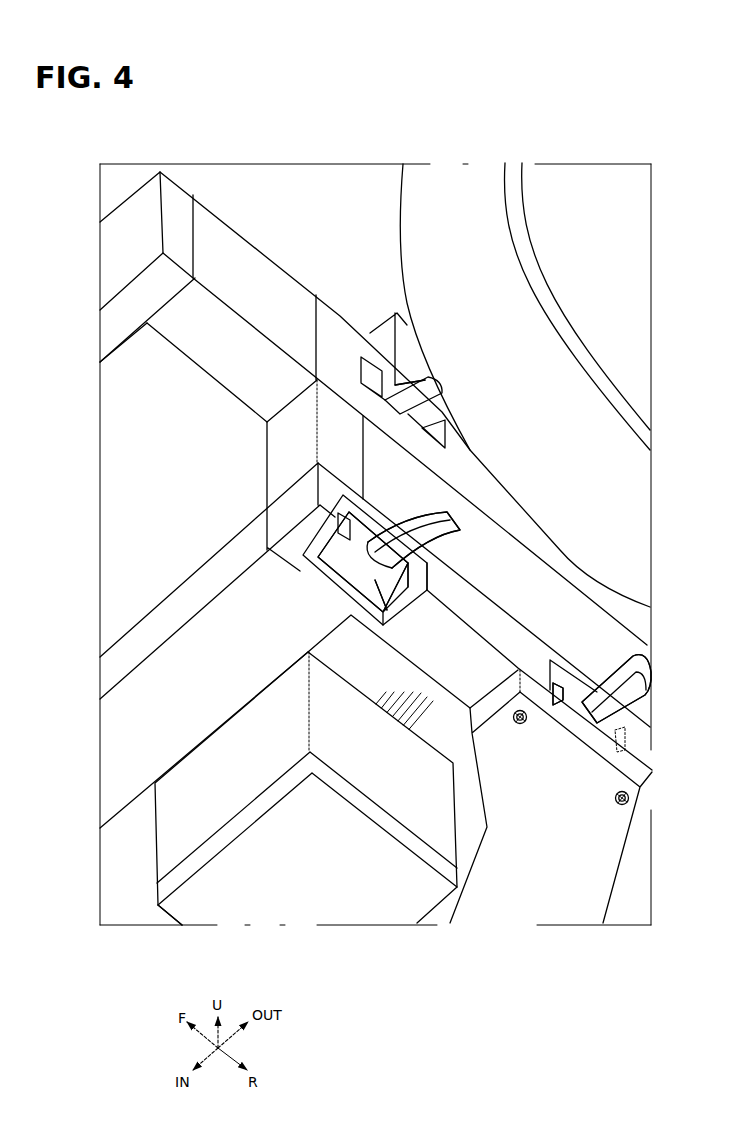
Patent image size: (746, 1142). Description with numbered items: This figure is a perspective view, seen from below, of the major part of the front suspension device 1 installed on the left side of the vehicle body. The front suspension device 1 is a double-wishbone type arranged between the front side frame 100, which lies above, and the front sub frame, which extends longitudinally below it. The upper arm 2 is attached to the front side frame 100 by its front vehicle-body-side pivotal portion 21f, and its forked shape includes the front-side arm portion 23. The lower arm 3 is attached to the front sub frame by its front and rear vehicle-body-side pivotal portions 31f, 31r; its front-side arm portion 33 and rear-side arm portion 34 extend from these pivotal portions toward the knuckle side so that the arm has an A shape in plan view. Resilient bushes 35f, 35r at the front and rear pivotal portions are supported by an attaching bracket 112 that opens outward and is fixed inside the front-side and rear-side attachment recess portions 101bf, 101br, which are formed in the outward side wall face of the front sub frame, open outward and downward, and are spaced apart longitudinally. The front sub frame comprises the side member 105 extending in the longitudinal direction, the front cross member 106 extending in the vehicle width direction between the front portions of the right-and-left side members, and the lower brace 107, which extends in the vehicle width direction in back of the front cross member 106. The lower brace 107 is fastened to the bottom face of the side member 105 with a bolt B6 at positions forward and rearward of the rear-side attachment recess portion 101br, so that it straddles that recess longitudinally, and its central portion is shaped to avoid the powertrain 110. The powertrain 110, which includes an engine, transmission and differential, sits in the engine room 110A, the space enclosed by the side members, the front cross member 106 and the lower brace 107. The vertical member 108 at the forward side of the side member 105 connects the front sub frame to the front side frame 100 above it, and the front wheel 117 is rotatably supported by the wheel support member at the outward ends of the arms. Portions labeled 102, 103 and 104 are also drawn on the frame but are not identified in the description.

The front suspension device 1 is at (673, 677).
The upper arm 2 is at (453, 432).
The lower arm 3 is at (400, 520).
The front vehicle-body-side pivotal portion 21f is at (392, 387).
The front-side arm portion 23 is at (403, 390).
The front vehicle-body-side pivotal portion 31f is at (420, 577).
The rear vehicle-body-side pivotal portion 31r is at (553, 667).
The front-side arm portion 33 is at (418, 513).
The rear-side arm portion 34 is at (645, 708).
The front resilient bush 35f is at (395, 606).
The rear resilient bush 35r is at (577, 703).
The front side frame 100 is at (352, 323).
The front-side attachment recess portion 101bf is at (370, 523).
The rear-side attachment recess portion 101br is at (600, 675).
The upper boss portion 102 is at (385, 317).
The upper step face 103 is at (207, 370).
The front end face 104 is at (125, 343).
The side member 105 is at (512, 623).
The front cross member 106 is at (213, 550).
The lower brace 107 is at (620, 870).
The vertical member 108 is at (263, 468).
The powertrain 110 is at (458, 827).
The engine room 110A is at (137, 908).
The attaching bracket 112 is at (348, 597).
The front wheel 117 is at (397, 210).
The bolt B6 is at (613, 802).